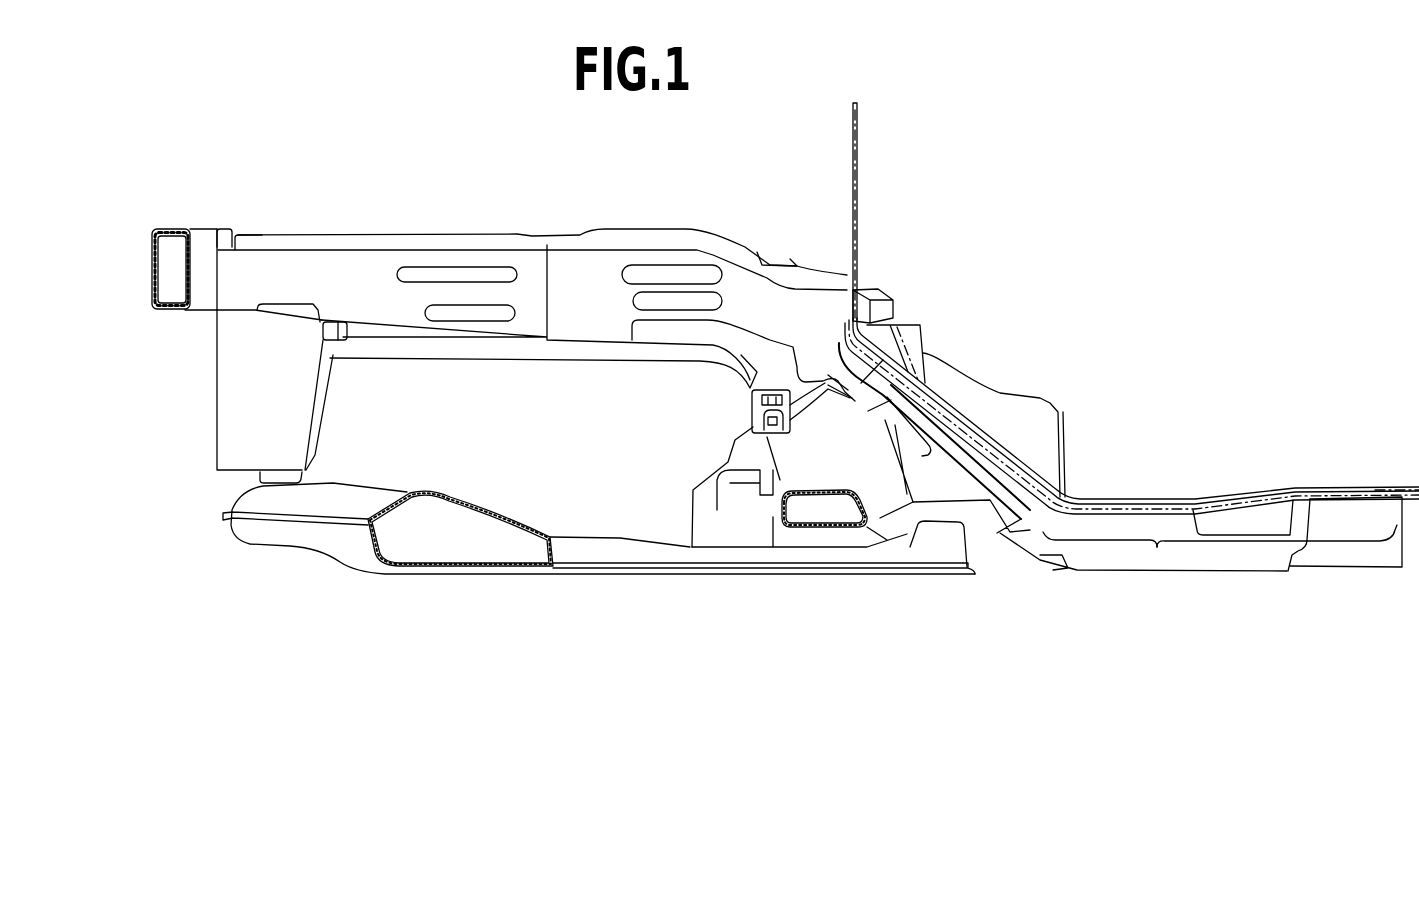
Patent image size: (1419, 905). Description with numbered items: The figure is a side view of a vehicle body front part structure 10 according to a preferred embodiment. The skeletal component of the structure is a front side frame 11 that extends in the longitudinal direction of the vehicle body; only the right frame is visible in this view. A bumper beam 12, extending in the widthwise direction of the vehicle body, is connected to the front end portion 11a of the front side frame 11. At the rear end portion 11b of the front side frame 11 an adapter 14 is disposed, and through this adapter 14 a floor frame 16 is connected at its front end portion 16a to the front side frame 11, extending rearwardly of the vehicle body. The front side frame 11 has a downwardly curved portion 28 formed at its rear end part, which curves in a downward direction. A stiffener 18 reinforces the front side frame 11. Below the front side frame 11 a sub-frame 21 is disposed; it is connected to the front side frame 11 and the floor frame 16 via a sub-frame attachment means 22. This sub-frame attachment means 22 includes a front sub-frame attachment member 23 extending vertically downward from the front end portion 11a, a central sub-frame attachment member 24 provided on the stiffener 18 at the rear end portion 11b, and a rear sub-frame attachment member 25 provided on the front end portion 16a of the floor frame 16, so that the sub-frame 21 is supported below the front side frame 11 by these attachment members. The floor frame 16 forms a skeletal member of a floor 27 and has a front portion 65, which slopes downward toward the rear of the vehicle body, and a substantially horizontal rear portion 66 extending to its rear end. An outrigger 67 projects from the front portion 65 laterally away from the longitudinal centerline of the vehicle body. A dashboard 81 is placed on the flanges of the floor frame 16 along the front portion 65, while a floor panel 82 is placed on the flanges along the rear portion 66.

The vehicle body front part structure 10 is at (1030, 104).
The front side frame 11 is at (471, 233).
The front end portion of front side frame 11a is at (230, 283).
The rear end portion of front side frame 11b is at (828, 297).
The bumper beam 12 is at (170, 228).
The adapter 14 is at (878, 298).
The floor frame 16 is at (1150, 522).
The front end portion of floor frame 16a is at (943, 410).
The stiffener 18 is at (673, 332).
The sub-frame 21 is at (618, 575).
The sub-frame attachment means 22 is at (198, 356).
The front sub-frame attachment member 23 is at (235, 387).
The central sub-frame attachment member 24 is at (750, 388).
The rear sub-frame attachment member 25 is at (940, 512).
The floor 27 is at (1295, 493).
The downwardly curved portion 28 is at (777, 303).
The front portion of floor frame 65 is at (928, 452).
The rear portion of floor frame 66 is at (1157, 547).
The outrigger 67 is at (1052, 419).
The dashboard 81 is at (857, 146).
The floor panel 82 is at (1375, 490).